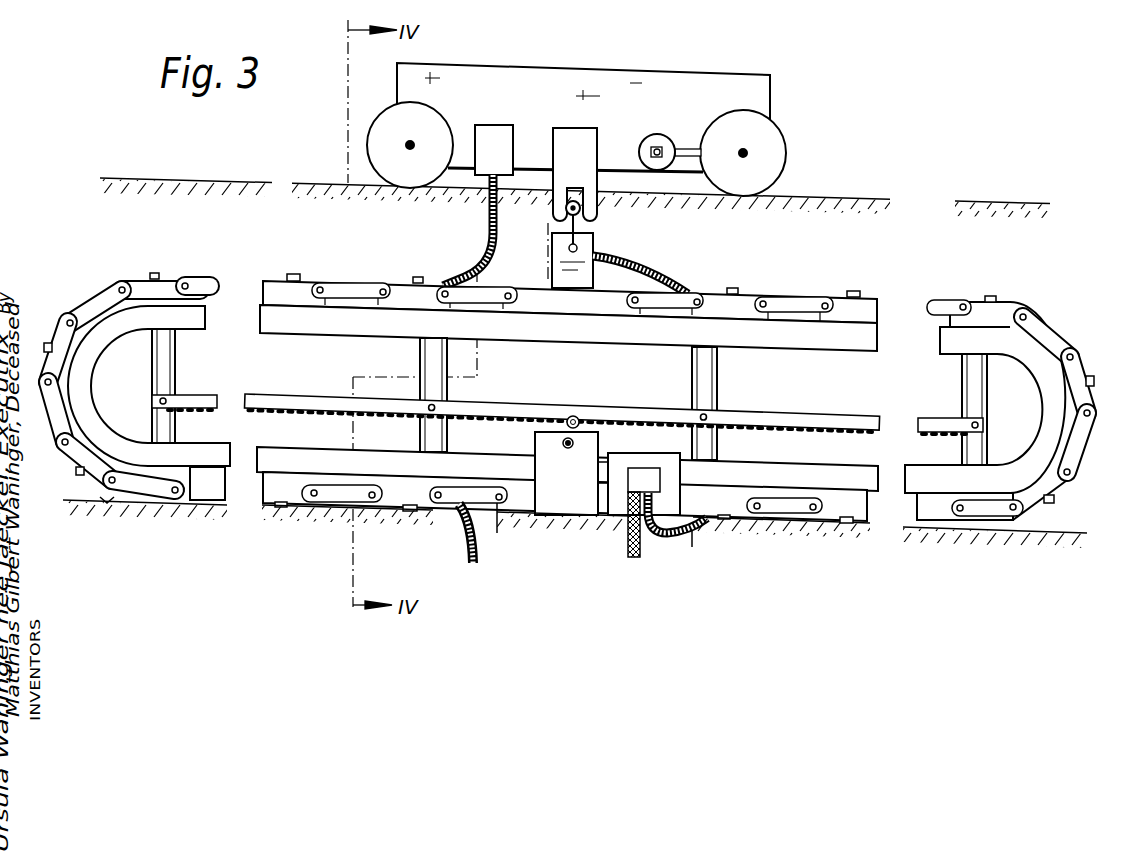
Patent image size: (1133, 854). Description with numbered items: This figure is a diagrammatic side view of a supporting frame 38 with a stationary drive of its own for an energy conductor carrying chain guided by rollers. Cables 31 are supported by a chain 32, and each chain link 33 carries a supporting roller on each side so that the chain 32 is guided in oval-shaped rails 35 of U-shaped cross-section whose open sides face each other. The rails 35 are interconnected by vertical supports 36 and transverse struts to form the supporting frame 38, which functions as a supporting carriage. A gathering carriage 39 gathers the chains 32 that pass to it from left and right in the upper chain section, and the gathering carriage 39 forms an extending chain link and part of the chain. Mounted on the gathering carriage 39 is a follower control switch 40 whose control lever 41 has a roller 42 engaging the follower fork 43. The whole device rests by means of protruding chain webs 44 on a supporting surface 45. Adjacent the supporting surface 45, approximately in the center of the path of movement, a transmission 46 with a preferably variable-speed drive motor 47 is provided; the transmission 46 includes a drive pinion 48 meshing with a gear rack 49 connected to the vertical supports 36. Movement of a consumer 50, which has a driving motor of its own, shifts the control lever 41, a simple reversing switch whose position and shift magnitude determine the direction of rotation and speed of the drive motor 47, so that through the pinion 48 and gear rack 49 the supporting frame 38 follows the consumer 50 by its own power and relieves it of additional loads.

The cables 31 is at (465, 546).
The chain 32 is at (307, 266).
The chain link 33 is at (137, 282).
The oval-shaped rails 35 is at (297, 318).
The vertical supports 36 is at (718, 373).
The supporting frame 38 is at (1097, 323).
The gathering carriage 39 is at (613, 295).
The follower control switch 40 is at (593, 249).
The control lever 41 is at (579, 229).
The roller 42 is at (557, 210).
The follower fork 43 is at (586, 148).
The protruding chain webs 44 is at (275, 510).
The supporting surface 45 is at (108, 502).
The transmission 46 is at (561, 506).
The drive motor 47 is at (618, 516).
The drive pinion 48 is at (579, 420).
The gear rack 49 is at (537, 410).
The consumer 50 is at (750, 101).